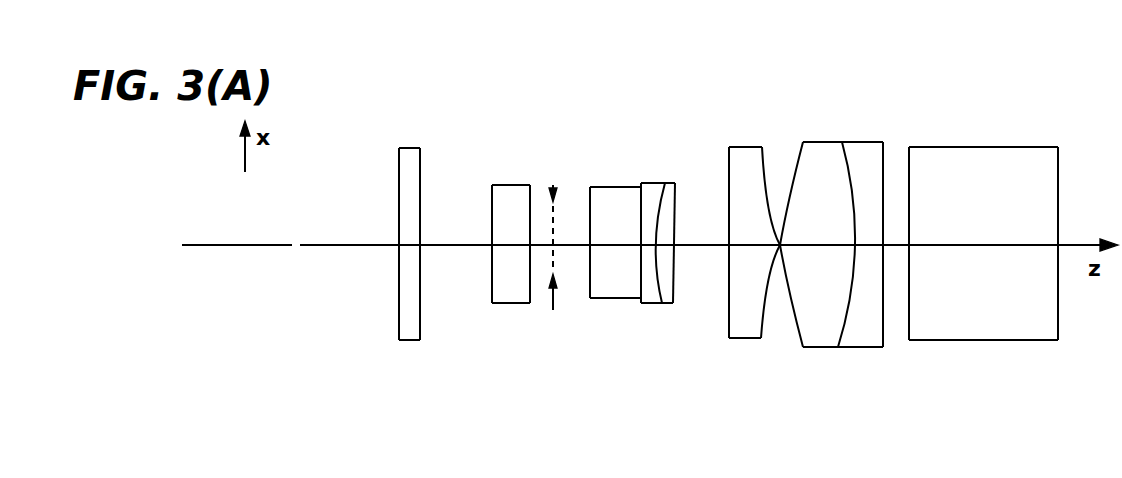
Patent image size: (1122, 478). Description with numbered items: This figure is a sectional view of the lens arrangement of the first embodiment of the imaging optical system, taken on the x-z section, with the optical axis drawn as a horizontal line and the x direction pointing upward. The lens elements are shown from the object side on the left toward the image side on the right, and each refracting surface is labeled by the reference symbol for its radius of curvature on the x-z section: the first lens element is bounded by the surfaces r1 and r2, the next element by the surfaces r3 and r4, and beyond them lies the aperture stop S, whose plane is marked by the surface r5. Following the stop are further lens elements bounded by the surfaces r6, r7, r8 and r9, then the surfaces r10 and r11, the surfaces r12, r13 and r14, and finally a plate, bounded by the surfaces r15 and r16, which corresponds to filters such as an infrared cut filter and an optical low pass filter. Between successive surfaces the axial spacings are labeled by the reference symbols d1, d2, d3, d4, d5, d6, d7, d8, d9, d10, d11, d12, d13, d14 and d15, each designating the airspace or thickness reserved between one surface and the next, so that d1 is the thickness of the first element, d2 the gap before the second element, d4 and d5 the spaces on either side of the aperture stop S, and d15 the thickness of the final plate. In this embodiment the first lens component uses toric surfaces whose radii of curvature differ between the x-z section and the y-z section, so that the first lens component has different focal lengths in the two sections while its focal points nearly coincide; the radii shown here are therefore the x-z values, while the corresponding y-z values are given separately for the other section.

The radius of curvature on the first surface r1 is at (398, 166).
The radius of curvature on the second surface r2 is at (421, 166).
The radius of curvature on the third surface r3 is at (491, 202).
The radius of curvature on the fourth surface r4 is at (531, 196).
The radius of curvature on the fifth surface r5 is at (552, 186).
The aperture stop S is at (555, 226).
The radius of curvature on the sixth surface r6 is at (590, 203).
The radius of curvature on the seventh surface r7 is at (642, 226).
The radius of curvature on the eighth surface r8 is at (662, 186).
The radius of curvature on the ninth surface r9 is at (676, 198).
The radius of curvature on the tenth surface r10 is at (728, 163).
The radius of curvature on the eleventh surface r11 is at (769, 168).
The radius of curvature on the twelfth surface r12 is at (792, 164).
The radius of curvature on the thirteenth surface r13 is at (852, 152).
The radius of curvature on the fourteenth surface r14 is at (885, 160).
The radius of curvature on the fifteenth surface r15 is at (910, 165).
The radius of curvature on the sixteenth surface r16 is at (1060, 165).
The airspace between the first and second surfaces d1 is at (408, 246).
The airspace between the second and third surfaces d2 is at (455, 246).
The airspace between the third and fourth surfaces d3 is at (510, 246).
The airspace between the fourth and fifth surfaces d4 is at (540, 246).
The airspace between the fifth and sixth surfaces d5 is at (572, 246).
The airspace between the sixth and seventh surfaces d6 is at (612, 246).
The airspace between the seventh and eighth surfaces d7 is at (630, 246).
The airspace between the eighth and ninth surfaces d8 is at (655, 246).
The airspace between the ninth and tenth surfaces d9 is at (699, 246).
The airspace between the tenth and eleventh surfaces d10 is at (746, 246).
The airspace between the eleventh and twelfth surfaces d11 is at (779, 248).
The airspace between the twelfth and thirteenth surfaces d12 is at (818, 246).
The airspace between the thirteenth and fourteenth surfaces d13 is at (871, 246).
The airspace between the fourteenth and fifteenth surfaces d14 is at (897, 246).
The airspace between the fifteenth and sixteenth surfaces d15 is at (996, 246).